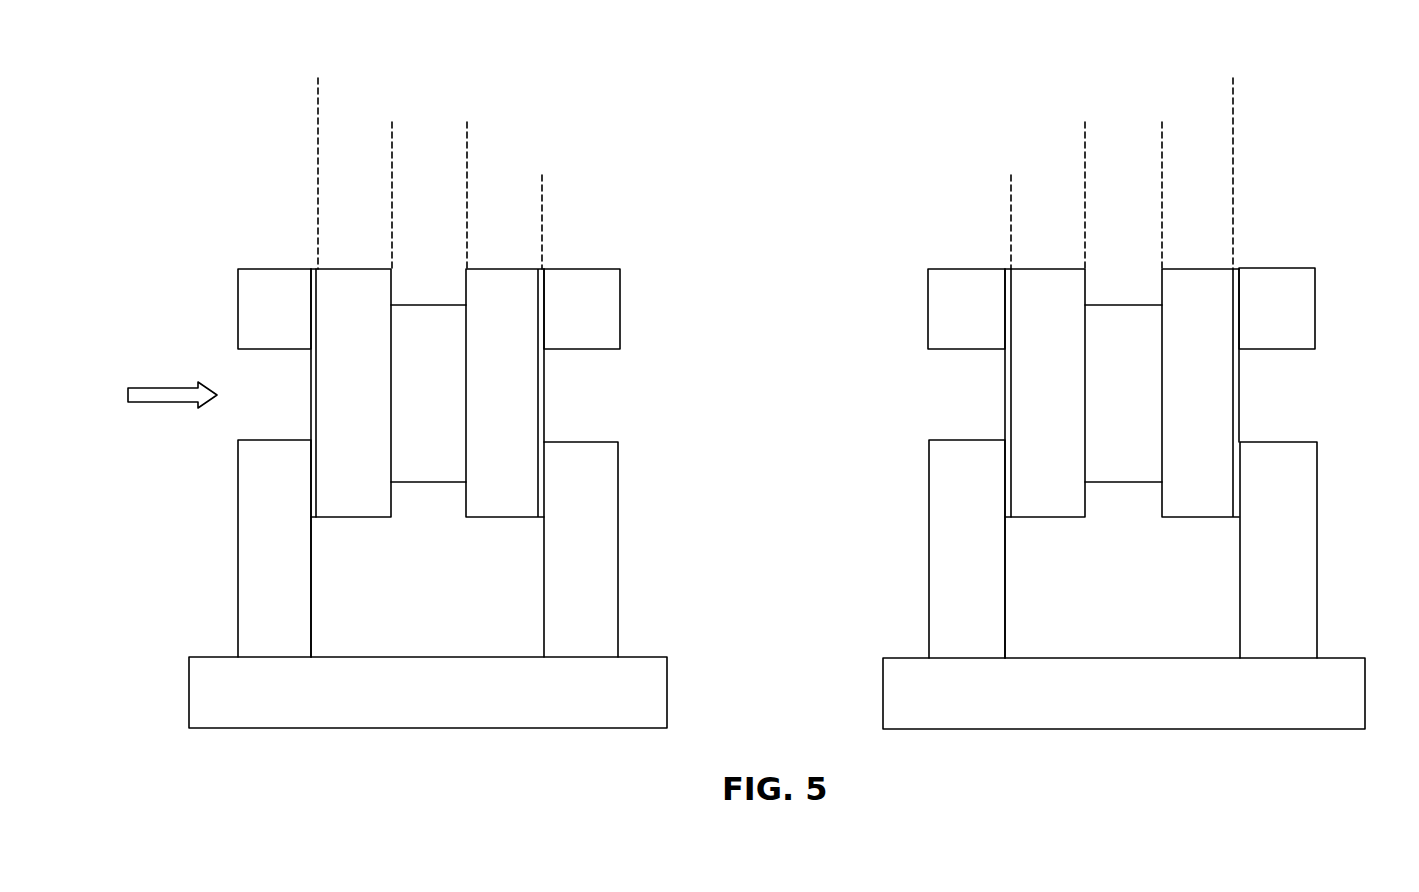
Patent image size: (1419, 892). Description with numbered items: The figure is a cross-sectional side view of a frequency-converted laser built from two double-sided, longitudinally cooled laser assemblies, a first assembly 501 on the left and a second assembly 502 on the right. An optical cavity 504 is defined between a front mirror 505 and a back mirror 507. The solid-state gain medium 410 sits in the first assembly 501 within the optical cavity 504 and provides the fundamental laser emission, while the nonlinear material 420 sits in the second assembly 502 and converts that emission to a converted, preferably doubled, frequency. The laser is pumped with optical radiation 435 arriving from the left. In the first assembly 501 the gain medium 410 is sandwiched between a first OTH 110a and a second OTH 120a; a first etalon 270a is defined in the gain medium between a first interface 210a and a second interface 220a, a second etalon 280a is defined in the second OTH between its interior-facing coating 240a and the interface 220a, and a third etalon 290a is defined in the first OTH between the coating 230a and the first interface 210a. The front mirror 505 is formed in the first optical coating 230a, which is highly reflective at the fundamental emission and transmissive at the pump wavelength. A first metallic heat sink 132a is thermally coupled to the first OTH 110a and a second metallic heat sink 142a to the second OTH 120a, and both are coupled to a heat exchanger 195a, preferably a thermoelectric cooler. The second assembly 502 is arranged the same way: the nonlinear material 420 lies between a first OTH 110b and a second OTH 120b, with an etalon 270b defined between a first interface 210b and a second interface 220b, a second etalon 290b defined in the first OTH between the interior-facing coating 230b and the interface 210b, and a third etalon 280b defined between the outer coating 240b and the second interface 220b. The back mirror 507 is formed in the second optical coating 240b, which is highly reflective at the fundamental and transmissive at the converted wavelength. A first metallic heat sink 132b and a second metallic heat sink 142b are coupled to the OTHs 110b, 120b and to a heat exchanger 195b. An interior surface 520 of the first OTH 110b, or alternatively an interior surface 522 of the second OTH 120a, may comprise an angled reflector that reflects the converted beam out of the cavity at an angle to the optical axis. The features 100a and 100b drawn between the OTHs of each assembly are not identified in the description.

The first assembly 501 is at (268, 140).
The second assembly 502 is at (1292, 140).
The optical cavity 504 is at (1223, 87).
The first OTH 110a is at (350, 268).
The second OTH 120a is at (505, 268).
The first dielectric layer of first device 100a is at (425, 320).
The first metallic heat sink 132a is at (238, 304).
The second metallic heat sink 142a is at (620, 307).
The heat exchanger 195a is at (400, 657).
The first interface 210a is at (391, 464).
The second interface 220a is at (466, 464).
The first optical coating 230a is at (313, 268).
The interior-facing coating 240a is at (545, 268).
The first etalon 270a is at (347, 137).
The second etalon 280a is at (552, 184).
The third etalon 290a is at (459, 184).
The solid-state gain medium 410 is at (448, 437).
The optical radiation 435 is at (152, 404).
The front mirror 505 is at (311, 414).
The interior surface 522 is at (545, 388).
The first OTH 110b is at (1047, 268).
The second OTH 120b is at (1200, 268).
The first dielectric layer of second device 100b is at (1120, 320).
The first metallic heat sink 132b is at (928, 304).
The second metallic heat sink 142b is at (1315, 307).
The heat exchanger 195b is at (1099, 658).
The first interface 210b is at (1085, 464).
The second interface 220b is at (1162, 464).
The interior-facing coating 230b is at (1006, 268).
The second optical coating 240b is at (1239, 268).
The etalon 270b is at (1208, 137).
The third etalon 280b is at (1243, 184).
The second etalon 290b is at (1152, 184).
The nonlinear material 420 is at (1145, 438).
The interior surface 520 is at (1005, 402).
The back mirror 507 is at (1240, 388).